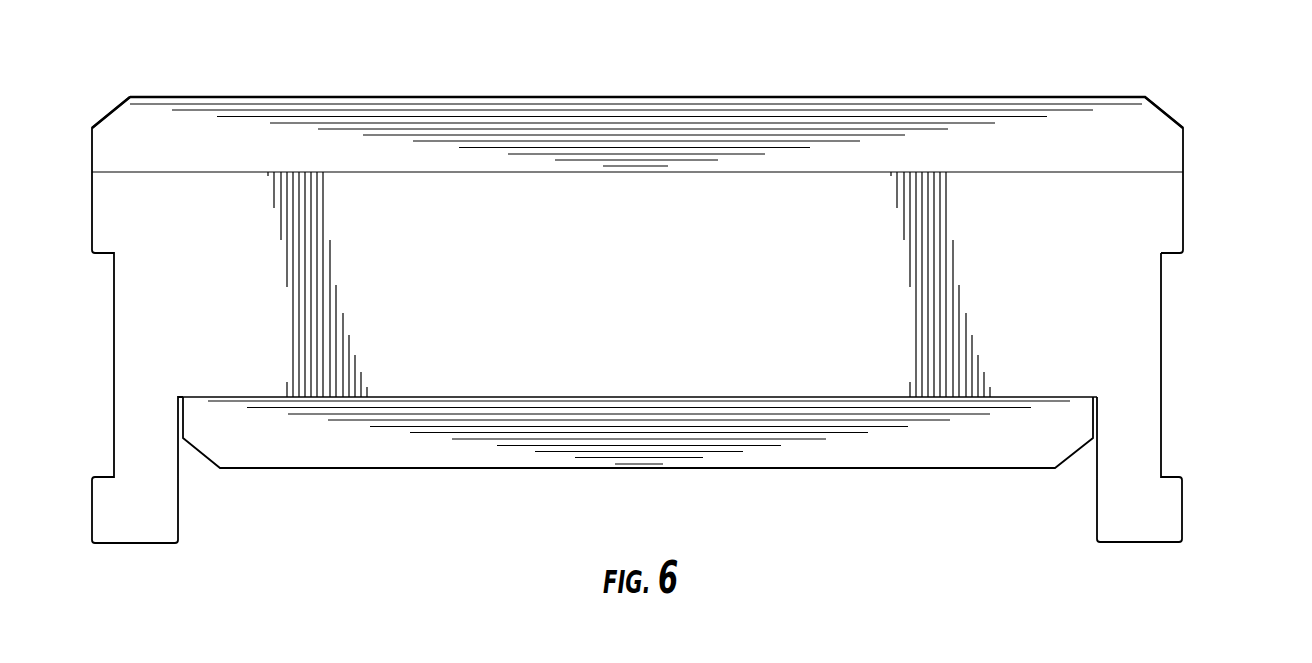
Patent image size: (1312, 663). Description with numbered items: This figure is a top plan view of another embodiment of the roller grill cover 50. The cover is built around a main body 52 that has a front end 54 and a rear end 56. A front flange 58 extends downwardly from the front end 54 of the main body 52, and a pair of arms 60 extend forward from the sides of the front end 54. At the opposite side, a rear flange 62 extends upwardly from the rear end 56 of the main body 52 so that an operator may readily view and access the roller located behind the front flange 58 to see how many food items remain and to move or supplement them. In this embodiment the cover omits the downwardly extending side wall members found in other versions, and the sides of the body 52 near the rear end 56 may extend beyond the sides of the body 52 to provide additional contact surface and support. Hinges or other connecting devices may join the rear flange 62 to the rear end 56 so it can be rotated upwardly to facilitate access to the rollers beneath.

The roller grill cover 50 is at (1222, 205).
The main body 52 is at (1092, 315).
The front end 54 is at (472, 397).
The rear end 56 is at (450, 170).
The front flange 58 is at (903, 438).
The arms 60 is at (1147, 504).
The rear flange 62 is at (951, 143).